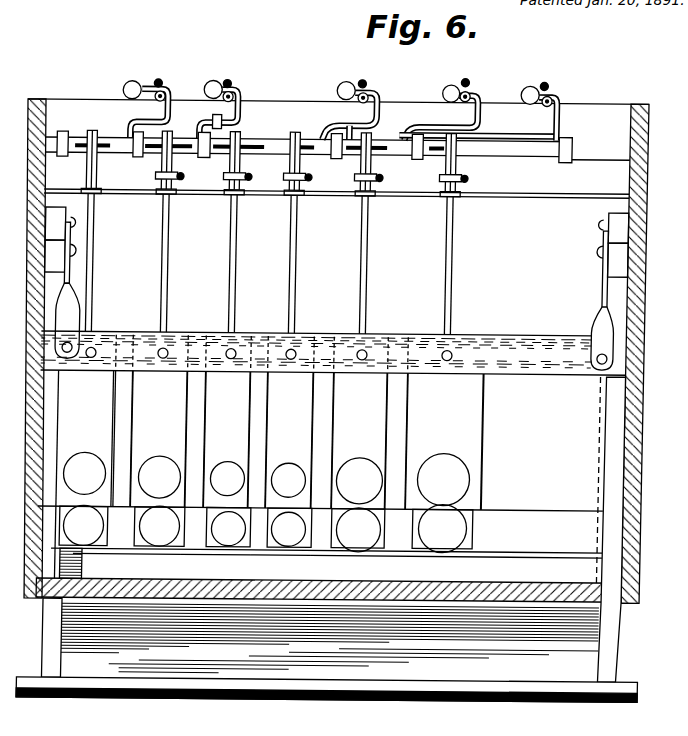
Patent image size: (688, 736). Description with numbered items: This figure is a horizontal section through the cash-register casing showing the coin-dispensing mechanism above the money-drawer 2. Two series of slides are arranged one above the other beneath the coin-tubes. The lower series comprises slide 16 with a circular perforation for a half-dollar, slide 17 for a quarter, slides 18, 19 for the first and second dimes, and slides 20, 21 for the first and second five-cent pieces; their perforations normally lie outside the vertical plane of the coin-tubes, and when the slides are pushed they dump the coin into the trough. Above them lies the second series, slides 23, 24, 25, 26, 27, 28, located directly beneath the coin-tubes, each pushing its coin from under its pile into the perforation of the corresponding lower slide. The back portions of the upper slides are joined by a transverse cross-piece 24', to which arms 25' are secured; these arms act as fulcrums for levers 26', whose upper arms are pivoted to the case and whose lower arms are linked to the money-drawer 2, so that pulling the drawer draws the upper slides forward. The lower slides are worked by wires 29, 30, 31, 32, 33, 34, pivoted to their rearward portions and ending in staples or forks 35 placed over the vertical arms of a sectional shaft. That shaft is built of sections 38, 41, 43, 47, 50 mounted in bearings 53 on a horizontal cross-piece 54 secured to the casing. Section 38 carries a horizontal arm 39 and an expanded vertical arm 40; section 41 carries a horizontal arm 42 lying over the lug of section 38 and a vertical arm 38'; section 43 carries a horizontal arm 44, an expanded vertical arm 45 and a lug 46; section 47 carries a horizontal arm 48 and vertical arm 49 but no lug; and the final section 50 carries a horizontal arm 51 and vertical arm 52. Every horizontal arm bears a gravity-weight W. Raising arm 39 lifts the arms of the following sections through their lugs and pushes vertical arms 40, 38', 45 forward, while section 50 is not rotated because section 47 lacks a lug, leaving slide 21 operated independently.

The money-drawer 2 is at (334, 537).
The slide 16 is at (478, 549).
The slide 17 is at (376, 552).
The slide 18 is at (441, 566).
The slide 19 is at (262, 566).
The slide 20 is at (200, 566).
The slide 21 is at (120, 563).
The slide 23 is at (444, 463).
The slide 24 is at (359, 462).
The slide 25 is at (290, 459).
The slide 26 is at (416, 379).
The slide 27 is at (159, 458).
The slide 28 is at (83, 474).
The cross-piece 24' is at (572, 338).
The arms 25' is at (332, 292).
The levers 26' is at (76, 240).
The wire 29 is at (466, 266).
The wire 30 is at (379, 265).
The wire 31 is at (308, 264).
The wire 32 is at (245, 264).
The wire 33 is at (180, 263).
The wire 34 is at (106, 262).
The staples or forks 35 is at (470, 136).
The section 38 is at (308, 162).
The vertical arm 38' is at (355, 160).
The horizontal arm 39 is at (559, 112).
The vertical arm 40 is at (332, 167).
The section 41 is at (416, 131).
The horizontal arm 42 is at (473, 97).
The section 43 is at (349, 121).
The horizontal arm 44 is at (373, 94).
The vertical arm 45 is at (283, 166).
The lug 46 is at (280, 140).
The section 47 is at (199, 132).
The horizontal arm 48 is at (236, 97).
The vertical arm 49 is at (176, 154).
The section 50 is at (113, 136).
The horizontal arm 51 is at (166, 88).
The vertical arm 52 is at (103, 152).
The bearings 53 is at (409, 195).
The horizontal cross-piece 54 is at (610, 161).
The gravity-weights W is at (329, 80).